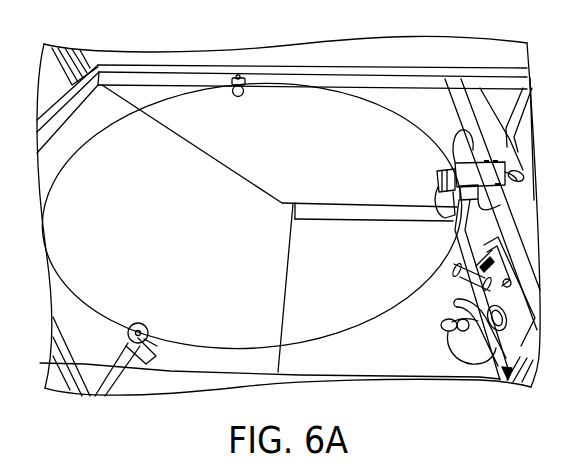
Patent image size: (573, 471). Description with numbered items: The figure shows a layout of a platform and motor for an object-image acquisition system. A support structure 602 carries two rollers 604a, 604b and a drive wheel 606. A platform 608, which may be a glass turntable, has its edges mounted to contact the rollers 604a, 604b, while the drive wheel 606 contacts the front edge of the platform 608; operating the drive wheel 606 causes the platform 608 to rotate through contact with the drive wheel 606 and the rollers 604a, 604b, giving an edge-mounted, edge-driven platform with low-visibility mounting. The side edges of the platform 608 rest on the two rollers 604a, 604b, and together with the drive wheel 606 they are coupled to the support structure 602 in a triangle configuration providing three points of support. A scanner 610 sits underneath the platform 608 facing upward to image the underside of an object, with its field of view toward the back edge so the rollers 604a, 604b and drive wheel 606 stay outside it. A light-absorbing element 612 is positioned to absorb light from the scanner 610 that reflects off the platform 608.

The support structure 602 is at (368, 60).
The roller 604a is at (238, 77).
The roller 604b is at (144, 341).
The drive wheel 606 is at (460, 163).
The platform 608 is at (317, 168).
The scanner 610 is at (484, 362).
The light-absorbing element 612 is at (280, 363).